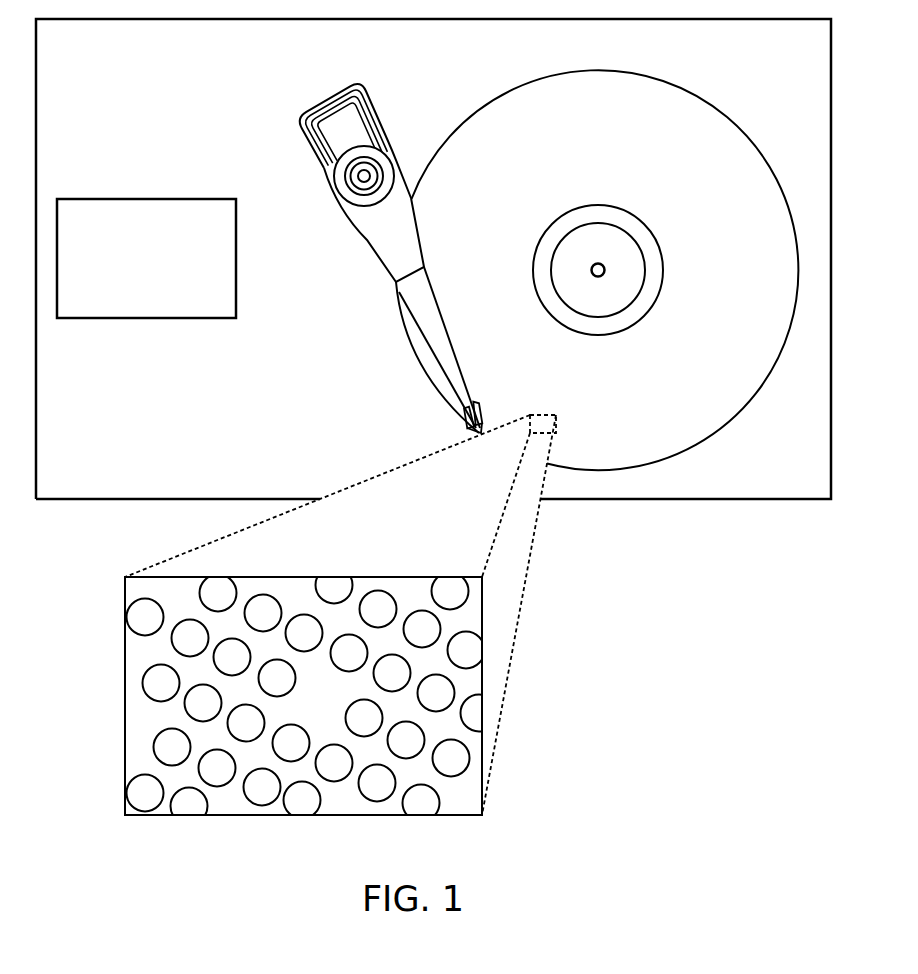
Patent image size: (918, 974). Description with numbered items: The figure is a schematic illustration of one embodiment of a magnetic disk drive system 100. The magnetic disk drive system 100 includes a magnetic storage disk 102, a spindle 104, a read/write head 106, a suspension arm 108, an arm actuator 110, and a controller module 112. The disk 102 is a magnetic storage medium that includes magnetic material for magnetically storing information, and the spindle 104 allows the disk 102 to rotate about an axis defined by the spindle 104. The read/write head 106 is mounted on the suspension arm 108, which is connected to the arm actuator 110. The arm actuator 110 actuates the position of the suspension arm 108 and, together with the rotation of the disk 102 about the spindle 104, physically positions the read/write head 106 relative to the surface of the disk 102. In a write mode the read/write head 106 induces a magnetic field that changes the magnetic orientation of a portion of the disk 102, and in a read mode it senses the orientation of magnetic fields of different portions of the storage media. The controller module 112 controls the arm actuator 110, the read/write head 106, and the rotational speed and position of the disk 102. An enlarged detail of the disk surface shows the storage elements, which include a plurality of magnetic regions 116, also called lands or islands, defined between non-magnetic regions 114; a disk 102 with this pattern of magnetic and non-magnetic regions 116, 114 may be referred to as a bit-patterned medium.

The magnetic disk drive system 100 is at (164, 76).
The magnetic storage disk 102 is at (740, 126).
The spindle 104 is at (592, 271).
The read/write head 106 is at (464, 421).
The suspension arm 108 is at (420, 308).
The arm actuator 110 is at (300, 138).
The controller module 112 is at (134, 280).
The non-magnetic regions 114 is at (142, 660).
The magnetic regions 116 is at (165, 747).